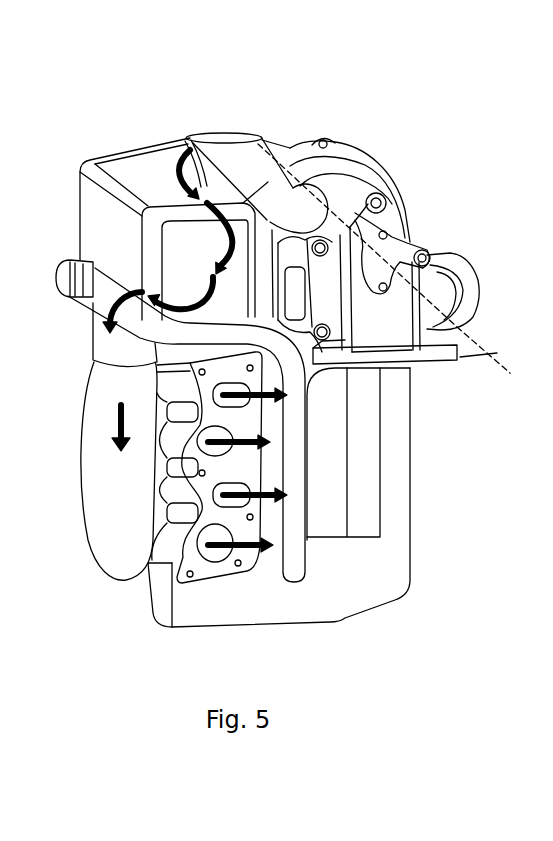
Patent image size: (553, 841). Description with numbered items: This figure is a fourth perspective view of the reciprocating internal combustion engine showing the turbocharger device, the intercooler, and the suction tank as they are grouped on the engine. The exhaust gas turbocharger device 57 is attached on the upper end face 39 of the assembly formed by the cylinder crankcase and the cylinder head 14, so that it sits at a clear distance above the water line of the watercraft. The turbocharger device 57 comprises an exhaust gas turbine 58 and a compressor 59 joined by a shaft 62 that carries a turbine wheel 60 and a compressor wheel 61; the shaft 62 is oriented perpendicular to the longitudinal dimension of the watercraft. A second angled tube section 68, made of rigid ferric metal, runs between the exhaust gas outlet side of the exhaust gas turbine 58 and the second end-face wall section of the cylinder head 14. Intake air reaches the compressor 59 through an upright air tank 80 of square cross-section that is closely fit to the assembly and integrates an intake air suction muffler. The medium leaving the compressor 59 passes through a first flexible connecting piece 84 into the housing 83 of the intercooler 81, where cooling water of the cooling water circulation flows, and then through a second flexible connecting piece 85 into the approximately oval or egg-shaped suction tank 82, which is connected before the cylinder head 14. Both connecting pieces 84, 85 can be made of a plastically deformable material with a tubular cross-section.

The cylinder head 14 is at (257, 578).
The upper end face 39 is at (479, 378).
The exhaust gas turbocharger device 57 is at (422, 196).
The exhaust gas turbine 58 is at (420, 229).
The compressor 59 is at (307, 126).
The turbine wheel 60 is at (394, 200).
The compressor wheel 61 is at (326, 163).
The shaft 62 is at (497, 335).
The second angled tube section 68 is at (436, 381).
The air tank 80 is at (394, 565).
The intercooler 81 is at (123, 131).
The suction tank 82 is at (82, 558).
The housing 83 is at (166, 126).
The first flexible connecting piece 84 is at (218, 122).
The second flexible connecting piece 85 is at (99, 340).